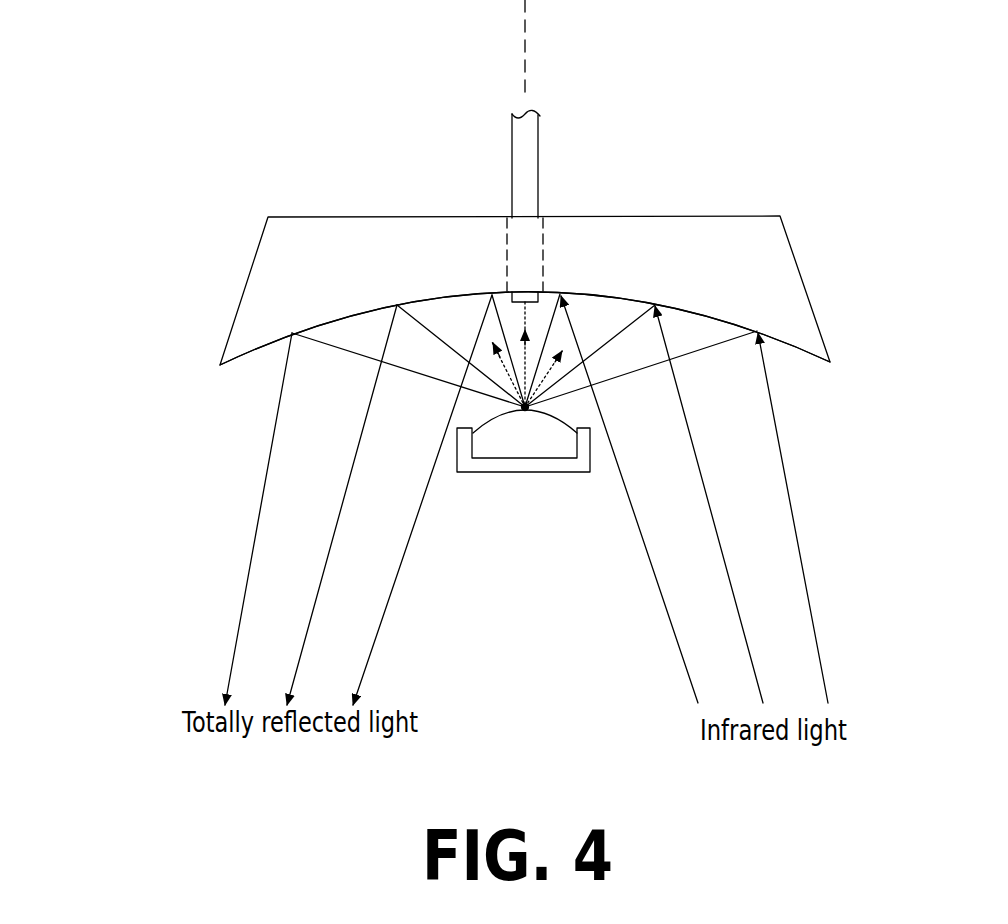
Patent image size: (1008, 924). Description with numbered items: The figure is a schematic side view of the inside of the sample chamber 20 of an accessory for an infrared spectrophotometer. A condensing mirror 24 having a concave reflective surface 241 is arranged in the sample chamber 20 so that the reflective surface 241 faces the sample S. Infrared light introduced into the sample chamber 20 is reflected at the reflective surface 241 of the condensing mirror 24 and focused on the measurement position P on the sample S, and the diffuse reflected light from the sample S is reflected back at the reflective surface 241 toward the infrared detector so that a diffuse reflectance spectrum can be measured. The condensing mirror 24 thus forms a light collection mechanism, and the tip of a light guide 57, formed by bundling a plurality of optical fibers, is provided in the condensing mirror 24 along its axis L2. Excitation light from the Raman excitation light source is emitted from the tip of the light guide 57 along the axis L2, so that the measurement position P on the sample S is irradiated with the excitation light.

The sample chamber 20 is at (731, 136).
The condensing mirror 24 is at (260, 262).
The reflective surface 241 is at (243, 353).
The light guide 57 is at (508, 143).
The axis of the condensing mirror L2 is at (524, 34).
The sample S is at (505, 450).
The measurement position P is at (528, 420).